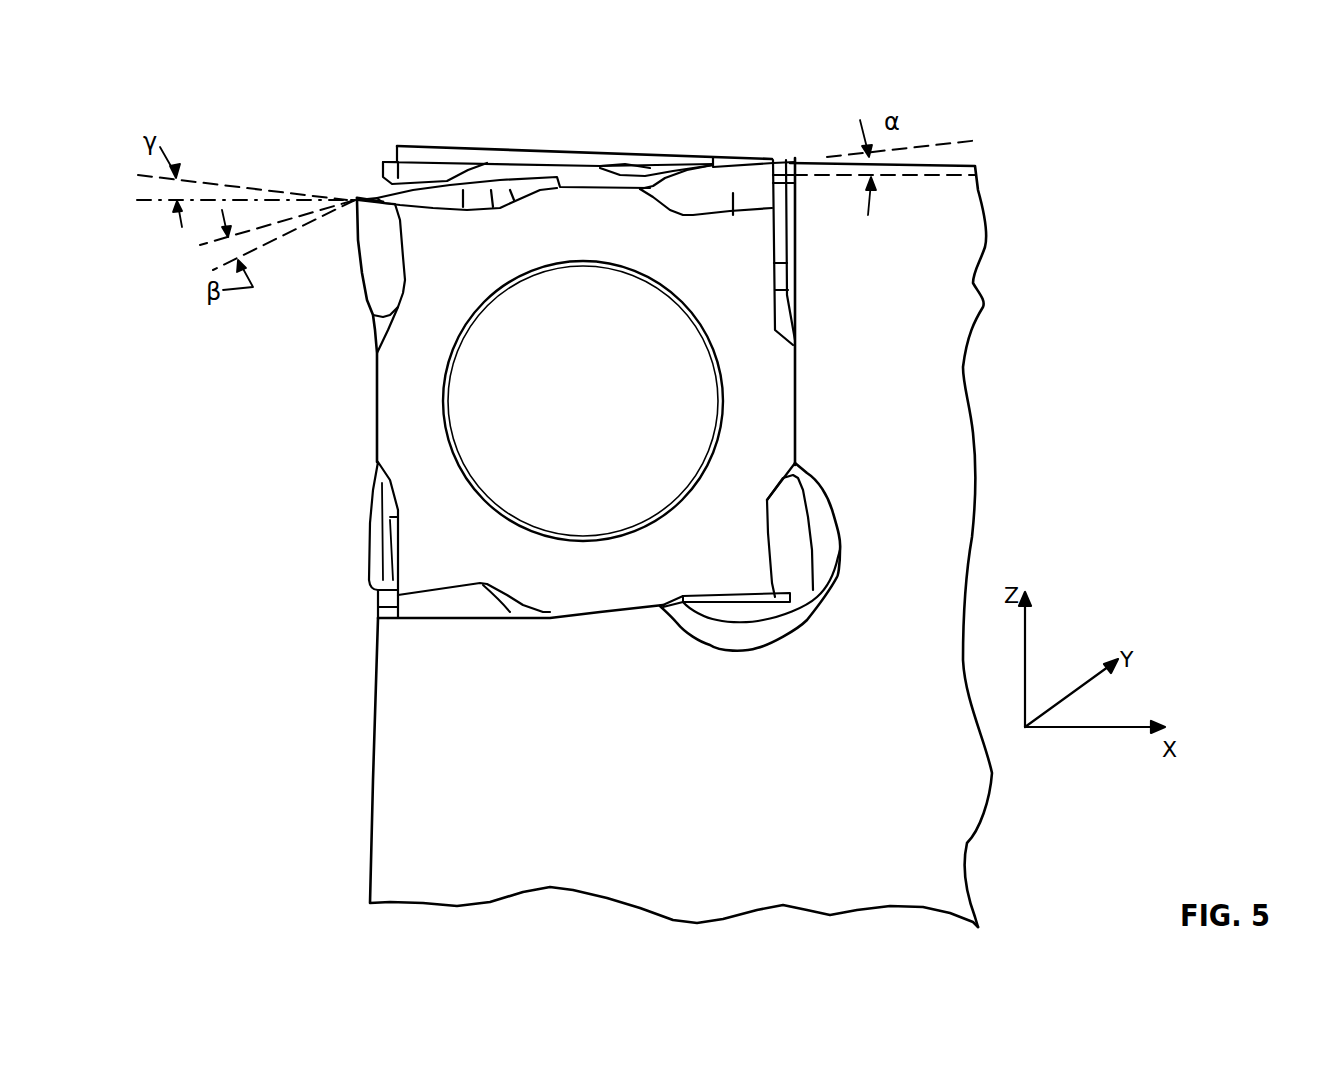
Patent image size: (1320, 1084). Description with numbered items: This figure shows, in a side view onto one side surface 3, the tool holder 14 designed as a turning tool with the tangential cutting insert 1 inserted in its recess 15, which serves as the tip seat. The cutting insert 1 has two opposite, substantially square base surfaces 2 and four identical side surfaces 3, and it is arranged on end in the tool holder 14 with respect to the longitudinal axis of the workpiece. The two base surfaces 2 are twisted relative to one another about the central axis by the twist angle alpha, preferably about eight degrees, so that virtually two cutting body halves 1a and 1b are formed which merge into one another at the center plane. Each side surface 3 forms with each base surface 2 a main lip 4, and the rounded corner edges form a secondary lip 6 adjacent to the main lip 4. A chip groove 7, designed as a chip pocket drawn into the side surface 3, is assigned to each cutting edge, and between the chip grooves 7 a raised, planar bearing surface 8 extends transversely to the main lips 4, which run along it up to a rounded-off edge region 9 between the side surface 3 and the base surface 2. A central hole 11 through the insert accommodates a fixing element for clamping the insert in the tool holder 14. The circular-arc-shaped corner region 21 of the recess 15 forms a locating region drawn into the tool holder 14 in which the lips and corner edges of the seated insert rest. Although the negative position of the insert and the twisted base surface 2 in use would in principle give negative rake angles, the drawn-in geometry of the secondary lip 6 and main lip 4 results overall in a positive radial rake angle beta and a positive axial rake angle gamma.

The tangential cutting insert 1 is at (797, 377).
The cutting body half 1a is at (757, 262).
The cutting body half 1b is at (787, 220).
The base surface 2 is at (768, 425).
The side surface 3 is at (426, 165).
The main lip 4 is at (470, 203).
The secondary lip 6 is at (357, 198).
The chip groove 7 is at (500, 195).
The bearing surface 8 is at (577, 173).
The rounded-off edge region 9 is at (373, 240).
The central hole 11 is at (583, 401).
The tool holder 14 is at (950, 412).
The recess 15 is at (385, 612).
The corner region 21 is at (750, 637).